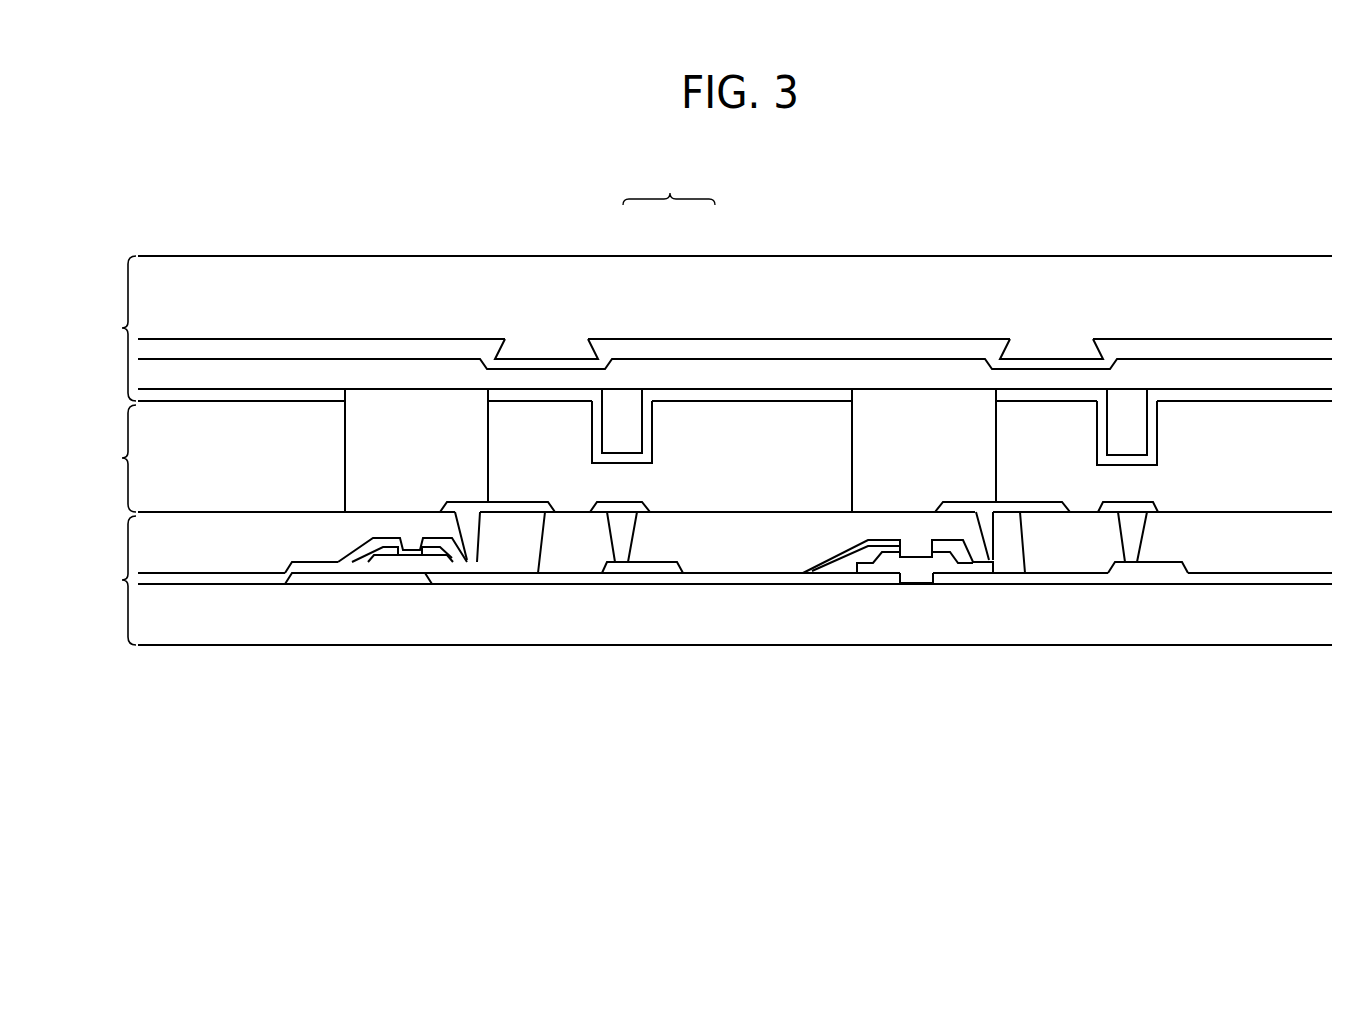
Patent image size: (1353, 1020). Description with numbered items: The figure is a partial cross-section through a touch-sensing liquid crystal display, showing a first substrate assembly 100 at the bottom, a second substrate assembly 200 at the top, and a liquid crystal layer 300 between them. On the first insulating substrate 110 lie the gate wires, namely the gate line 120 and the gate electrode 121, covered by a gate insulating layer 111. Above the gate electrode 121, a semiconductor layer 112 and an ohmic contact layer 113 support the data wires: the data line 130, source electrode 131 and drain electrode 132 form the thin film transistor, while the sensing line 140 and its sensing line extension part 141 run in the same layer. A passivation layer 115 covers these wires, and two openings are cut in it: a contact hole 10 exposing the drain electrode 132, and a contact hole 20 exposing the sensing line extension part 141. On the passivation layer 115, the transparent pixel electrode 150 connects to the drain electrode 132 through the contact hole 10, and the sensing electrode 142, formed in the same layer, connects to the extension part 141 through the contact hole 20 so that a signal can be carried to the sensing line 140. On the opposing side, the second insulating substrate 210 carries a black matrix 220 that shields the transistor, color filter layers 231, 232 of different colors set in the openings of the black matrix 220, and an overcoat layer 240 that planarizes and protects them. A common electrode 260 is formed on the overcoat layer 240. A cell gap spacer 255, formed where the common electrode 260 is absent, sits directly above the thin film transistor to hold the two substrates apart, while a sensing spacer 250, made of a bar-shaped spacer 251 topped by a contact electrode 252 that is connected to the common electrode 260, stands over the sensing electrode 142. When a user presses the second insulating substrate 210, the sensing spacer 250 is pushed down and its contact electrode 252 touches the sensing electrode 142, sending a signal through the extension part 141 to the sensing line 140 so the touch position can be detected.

The contact hole 10 is at (458, 486).
The contact hole 20 is at (640, 488).
The first substrate assembly 100 is at (108, 580).
The first insulating substrate 110 is at (192, 625).
The gate insulating layer 111 is at (1063, 574).
The semiconductor layer 112 is at (457, 566).
The ohmic contact layer 113 is at (435, 562).
The passivation layer 115 is at (1275, 556).
The gate line 120 is at (310, 586).
The gate electrode 121 is at (407, 582).
The data line 130 is at (825, 568).
The source electrode 131 is at (365, 563).
The drain electrode 132 is at (472, 568).
The sensing line 140 is at (677, 574).
The sensing line extension part 141 is at (615, 563).
The sensing electrode 142 is at (633, 562).
The pixel electrode 150 is at (545, 515).
The second substrate assembly 200 is at (108, 328).
The second insulating substrate 210 is at (480, 275).
The black matrix 220 is at (786, 356).
The color filter layer 231 is at (545, 358).
The color filter layer 232 is at (1050, 358).
The overcoat layer 240 is at (1178, 373).
The sensing spacer 250 is at (669, 184).
The spacer 251 is at (627, 400).
The contact electrode 252 is at (618, 410).
The cell gap spacer 255 is at (410, 413).
The common electrode 260 is at (303, 397).
The liquid crystal layer 300 is at (108, 458).